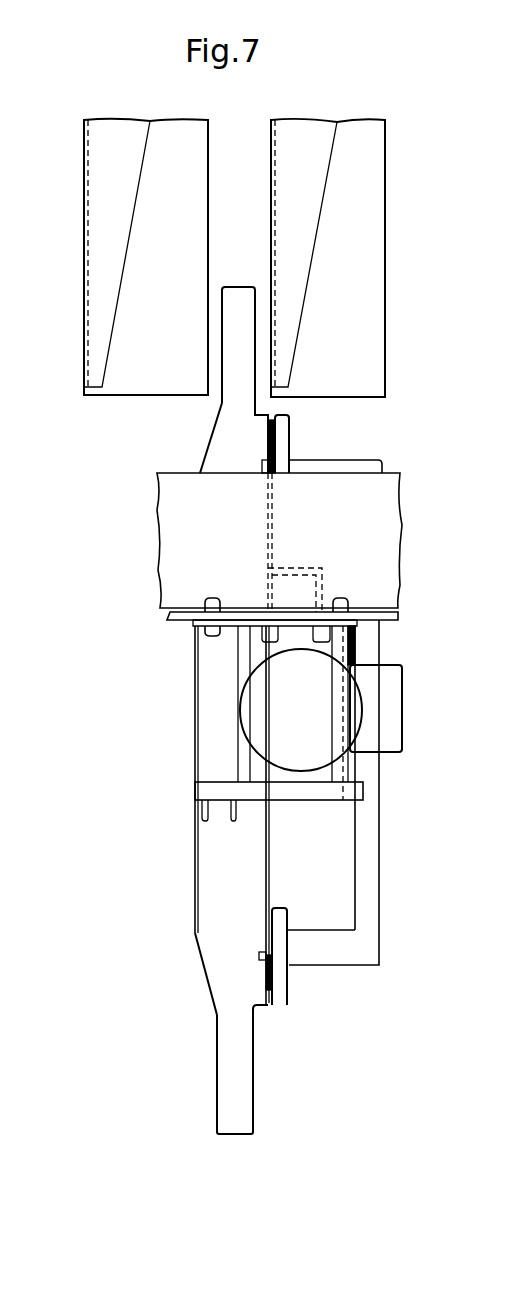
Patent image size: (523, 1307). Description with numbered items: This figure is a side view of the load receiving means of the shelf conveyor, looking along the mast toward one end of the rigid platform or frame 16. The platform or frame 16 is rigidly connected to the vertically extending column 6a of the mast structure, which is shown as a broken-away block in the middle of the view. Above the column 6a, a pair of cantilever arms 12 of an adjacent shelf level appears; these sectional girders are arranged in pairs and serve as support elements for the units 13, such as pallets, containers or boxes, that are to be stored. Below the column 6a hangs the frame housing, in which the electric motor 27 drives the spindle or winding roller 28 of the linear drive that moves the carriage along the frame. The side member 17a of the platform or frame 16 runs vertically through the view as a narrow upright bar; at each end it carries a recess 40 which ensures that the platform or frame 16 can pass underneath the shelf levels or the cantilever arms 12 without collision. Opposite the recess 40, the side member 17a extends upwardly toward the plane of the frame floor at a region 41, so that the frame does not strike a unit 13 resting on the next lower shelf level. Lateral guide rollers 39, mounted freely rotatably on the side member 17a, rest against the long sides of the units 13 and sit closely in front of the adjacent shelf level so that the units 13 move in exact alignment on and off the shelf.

The cantilever arm 12 is at (98, 226).
The unit 13 is at (137, 373).
The recess 40 is at (258, 342).
The side member 17a is at (237, 420).
The lateral guide roller 39 is at (295, 437).
The column 6a is at (375, 525).
The platform or frame 16 is at (195, 645).
The electric motor 27 is at (355, 695).
The spindle or winding roller 28 is at (215, 810).
The region 41 is at (213, 1052).